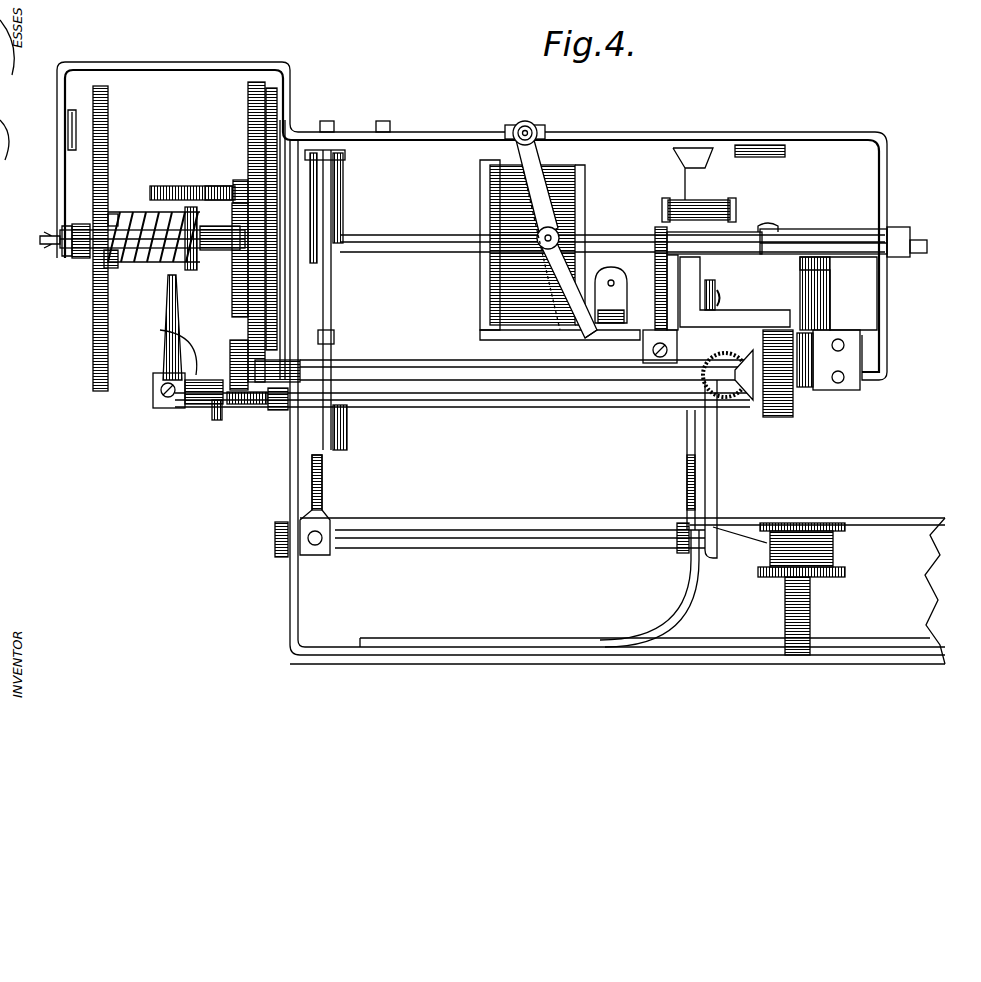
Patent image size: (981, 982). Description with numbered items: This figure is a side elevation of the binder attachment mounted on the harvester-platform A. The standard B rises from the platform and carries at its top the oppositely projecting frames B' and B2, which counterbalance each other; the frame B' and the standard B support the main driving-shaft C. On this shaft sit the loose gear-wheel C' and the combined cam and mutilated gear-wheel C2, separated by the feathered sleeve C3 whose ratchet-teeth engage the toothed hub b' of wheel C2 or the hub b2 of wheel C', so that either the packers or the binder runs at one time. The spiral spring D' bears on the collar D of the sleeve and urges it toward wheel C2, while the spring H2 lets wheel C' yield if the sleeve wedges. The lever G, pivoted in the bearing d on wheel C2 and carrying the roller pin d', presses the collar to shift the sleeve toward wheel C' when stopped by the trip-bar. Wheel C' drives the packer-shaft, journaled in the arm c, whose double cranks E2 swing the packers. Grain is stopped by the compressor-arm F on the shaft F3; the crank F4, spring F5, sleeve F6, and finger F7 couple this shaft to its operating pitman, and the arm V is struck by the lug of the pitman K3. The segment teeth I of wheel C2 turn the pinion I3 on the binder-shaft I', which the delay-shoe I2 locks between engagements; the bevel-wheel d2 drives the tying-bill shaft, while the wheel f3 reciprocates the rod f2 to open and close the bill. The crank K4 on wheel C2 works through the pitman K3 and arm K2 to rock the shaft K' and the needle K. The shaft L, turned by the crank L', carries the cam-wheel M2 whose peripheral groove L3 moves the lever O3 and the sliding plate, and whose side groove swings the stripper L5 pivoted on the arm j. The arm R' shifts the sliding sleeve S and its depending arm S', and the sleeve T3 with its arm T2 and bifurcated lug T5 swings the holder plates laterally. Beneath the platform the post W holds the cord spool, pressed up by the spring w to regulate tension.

The forwardly-projecting frame B' is at (188, 148).
The frame B2 is at (456, 142).
The standard B is at (601, 402).
The harvester-platform A is at (660, 518).
The gear-wheel C' is at (113, 238).
The combined cam and mutilated gear-wheel C2 is at (248, 122).
The arm c is at (67, 139).
The main driving-shaft C is at (126, 221).
The spring H2 is at (79, 262).
The sleeve C3 is at (162, 266).
The toothed hub b2 is at (124, 270).
The collar D is at (195, 251).
The toothed hub b' is at (220, 256).
The spiral spring D' is at (117, 205).
The lever G is at (185, 186).
The pin d' is at (218, 184).
The bearing d is at (238, 183).
The teeth I is at (229, 260).
The pinion I3 is at (234, 342).
The sleeve F6 is at (166, 327).
The compressor-arm F is at (166, 350).
The finger F7 is at (185, 410).
The crank F4 is at (218, 424).
The spiral spring F5 is at (270, 406).
The compressor-shaft F3 is at (547, 407).
The delay-shoe I2 is at (258, 368).
The binder-shaft I' is at (522, 358).
The arm V is at (348, 433).
The crank K4 is at (318, 200).
The crank L' is at (352, 198).
The pitman K3 is at (331, 300).
The arm K2 is at (326, 505).
The shaft K' is at (520, 548).
The needle or binder arm K is at (723, 423).
The shaft L is at (612, 234).
The cam-wheel M2 is at (570, 216).
The cam-groove L3 is at (538, 262).
The lever O3 is at (565, 262).
The arm j is at (611, 295).
The stripper L5 is at (589, 329).
The arm R' is at (659, 295).
The sliding sleeve S is at (714, 243).
The depending arm S' is at (735, 292).
The double cranks E2 is at (712, 204).
The bifurcated lug T5 is at (770, 224).
The sleeve T3 is at (823, 230).
The arm T2 is at (838, 293).
The bevel-wheel d2 is at (736, 398).
The rod f2 is at (800, 393).
The wheel f3 is at (797, 400).
The post W is at (812, 606).
The spring w is at (786, 614).